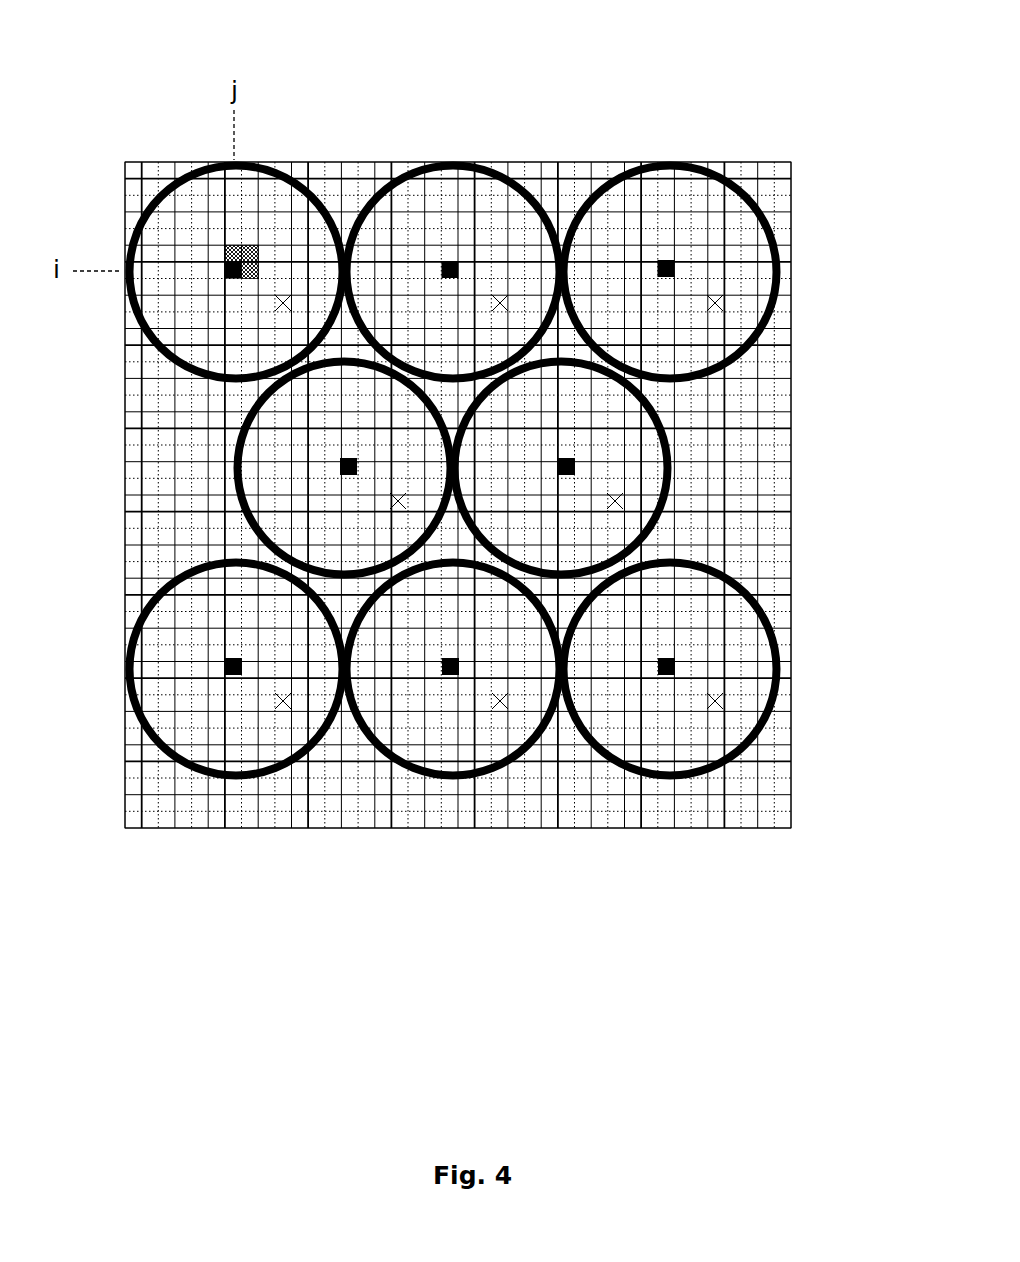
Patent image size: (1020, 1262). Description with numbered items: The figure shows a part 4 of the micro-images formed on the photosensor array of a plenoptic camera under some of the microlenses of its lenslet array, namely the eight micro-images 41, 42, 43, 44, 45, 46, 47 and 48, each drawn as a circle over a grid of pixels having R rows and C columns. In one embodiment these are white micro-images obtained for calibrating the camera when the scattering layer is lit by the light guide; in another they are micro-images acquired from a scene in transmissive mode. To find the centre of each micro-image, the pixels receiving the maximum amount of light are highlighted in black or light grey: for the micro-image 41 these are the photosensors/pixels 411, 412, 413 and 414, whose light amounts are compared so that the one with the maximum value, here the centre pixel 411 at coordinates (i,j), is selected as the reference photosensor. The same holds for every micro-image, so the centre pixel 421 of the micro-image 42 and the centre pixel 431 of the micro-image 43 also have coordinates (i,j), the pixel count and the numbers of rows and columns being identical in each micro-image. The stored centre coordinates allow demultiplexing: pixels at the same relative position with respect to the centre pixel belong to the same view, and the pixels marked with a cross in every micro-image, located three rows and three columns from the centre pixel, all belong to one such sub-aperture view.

The part of the micro-images 4 is at (755, 157).
The micro-image 41 is at (177, 178).
The centre pixel 411 is at (223, 270).
The photosensor/pixel 412 is at (223, 247).
The photosensor/pixel 413 is at (253, 251).
The photosensor/pixel 414 is at (257, 267).
The micro-image 42 is at (440, 162).
The centre pixel 421 is at (442, 262).
The micro-image 43 is at (632, 167).
The centre pixel 431 is at (668, 260).
The micro-image 44 is at (235, 453).
The micro-image 45 is at (672, 451).
The micro-image 46 is at (150, 740).
The micro-image 47 is at (438, 778).
The micro-image 48 is at (675, 780).